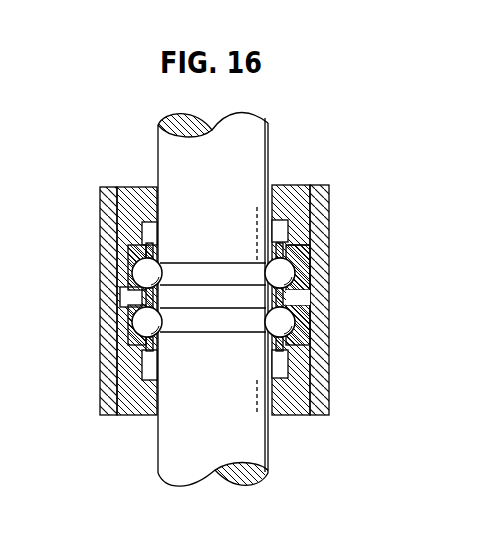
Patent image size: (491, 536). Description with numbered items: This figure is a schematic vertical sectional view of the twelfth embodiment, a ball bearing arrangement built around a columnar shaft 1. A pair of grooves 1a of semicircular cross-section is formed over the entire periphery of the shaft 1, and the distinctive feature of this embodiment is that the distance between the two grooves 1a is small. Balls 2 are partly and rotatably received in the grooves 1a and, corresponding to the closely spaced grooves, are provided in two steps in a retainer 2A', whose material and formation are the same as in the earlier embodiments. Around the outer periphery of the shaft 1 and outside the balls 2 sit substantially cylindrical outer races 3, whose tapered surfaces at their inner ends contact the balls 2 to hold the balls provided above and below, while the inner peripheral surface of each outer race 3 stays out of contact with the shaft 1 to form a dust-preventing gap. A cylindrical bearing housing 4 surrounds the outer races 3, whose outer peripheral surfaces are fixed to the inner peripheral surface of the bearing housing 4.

The shaft 1 is at (268, 147).
The grooves 1a is at (160, 279).
The balls 2 is at (296, 308).
The retainer 2A' is at (327, 248).
The outer race 3 is at (288, 188).
The bearing housing 4 is at (326, 342).